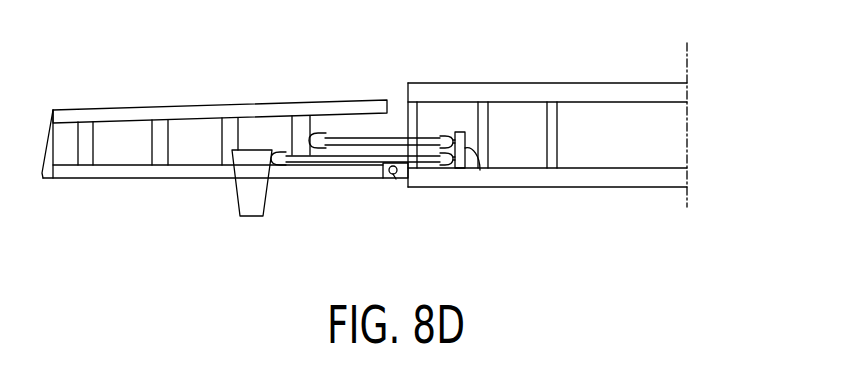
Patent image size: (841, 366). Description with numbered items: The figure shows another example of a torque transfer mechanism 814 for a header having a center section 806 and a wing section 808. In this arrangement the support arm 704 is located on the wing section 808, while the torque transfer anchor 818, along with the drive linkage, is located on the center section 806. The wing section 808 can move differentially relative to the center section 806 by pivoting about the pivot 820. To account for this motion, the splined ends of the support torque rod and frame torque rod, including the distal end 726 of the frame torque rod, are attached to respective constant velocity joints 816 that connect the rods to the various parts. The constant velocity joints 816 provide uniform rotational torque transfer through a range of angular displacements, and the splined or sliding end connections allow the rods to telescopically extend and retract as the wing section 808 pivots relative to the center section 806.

The wing section 808 is at (195, 92).
The center section 806 is at (556, 66).
The support arm 704 is at (248, 196).
The constant velocity joints 816 is at (316, 134).
The distal end of the frame torque rod 726 is at (352, 138).
The torque transfer mechanism 814 is at (350, 195).
The torque transfer anchor 818 is at (463, 170).
The pivot 820 is at (397, 181).